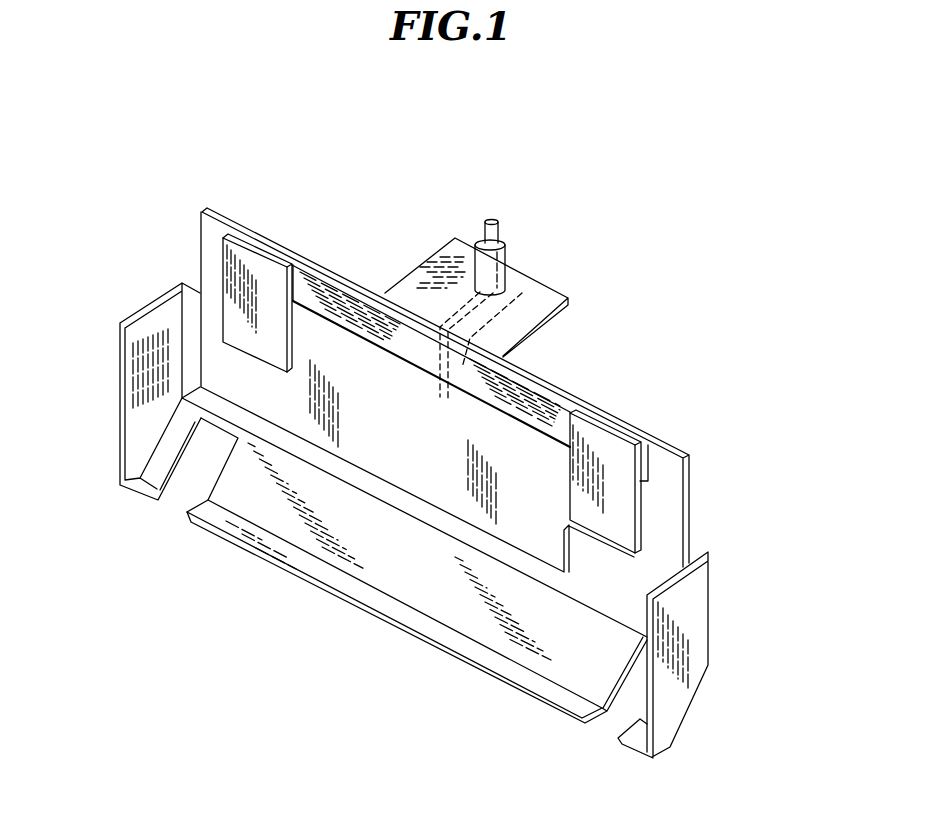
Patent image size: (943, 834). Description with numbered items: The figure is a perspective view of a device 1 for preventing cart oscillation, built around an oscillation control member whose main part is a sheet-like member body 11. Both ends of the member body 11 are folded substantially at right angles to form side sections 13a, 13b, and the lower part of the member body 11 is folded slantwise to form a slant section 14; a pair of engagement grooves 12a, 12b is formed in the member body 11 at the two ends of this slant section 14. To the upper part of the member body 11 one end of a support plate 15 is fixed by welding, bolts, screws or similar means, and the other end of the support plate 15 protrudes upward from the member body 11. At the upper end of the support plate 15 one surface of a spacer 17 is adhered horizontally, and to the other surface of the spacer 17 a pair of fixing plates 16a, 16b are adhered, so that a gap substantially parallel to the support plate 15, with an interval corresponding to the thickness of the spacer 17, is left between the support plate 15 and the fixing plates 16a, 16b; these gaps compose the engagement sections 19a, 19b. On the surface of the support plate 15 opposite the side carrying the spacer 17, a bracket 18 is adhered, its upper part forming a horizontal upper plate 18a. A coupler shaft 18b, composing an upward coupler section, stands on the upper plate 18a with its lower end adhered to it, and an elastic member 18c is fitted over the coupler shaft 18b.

The component holder 1 is at (296, 206).
The member body 11 is at (711, 600).
The engagement groove 12a is at (207, 495).
The engagement groove 12b is at (633, 721).
The side section 13a is at (158, 297).
The side section 13b is at (683, 675).
The slant section 14 is at (420, 580).
The support plate 15 is at (673, 446).
The fixing plate 16a is at (223, 285).
The fixing plate 16b is at (630, 535).
The spacer 17 is at (530, 403).
The bracket 18 is at (490, 330).
The upper plate 18a is at (545, 333).
The coupler shaft 18b is at (493, 216).
The elastic member 18c is at (505, 263).
The engagement section 19a is at (313, 332).
The engagement section 19b is at (657, 502).